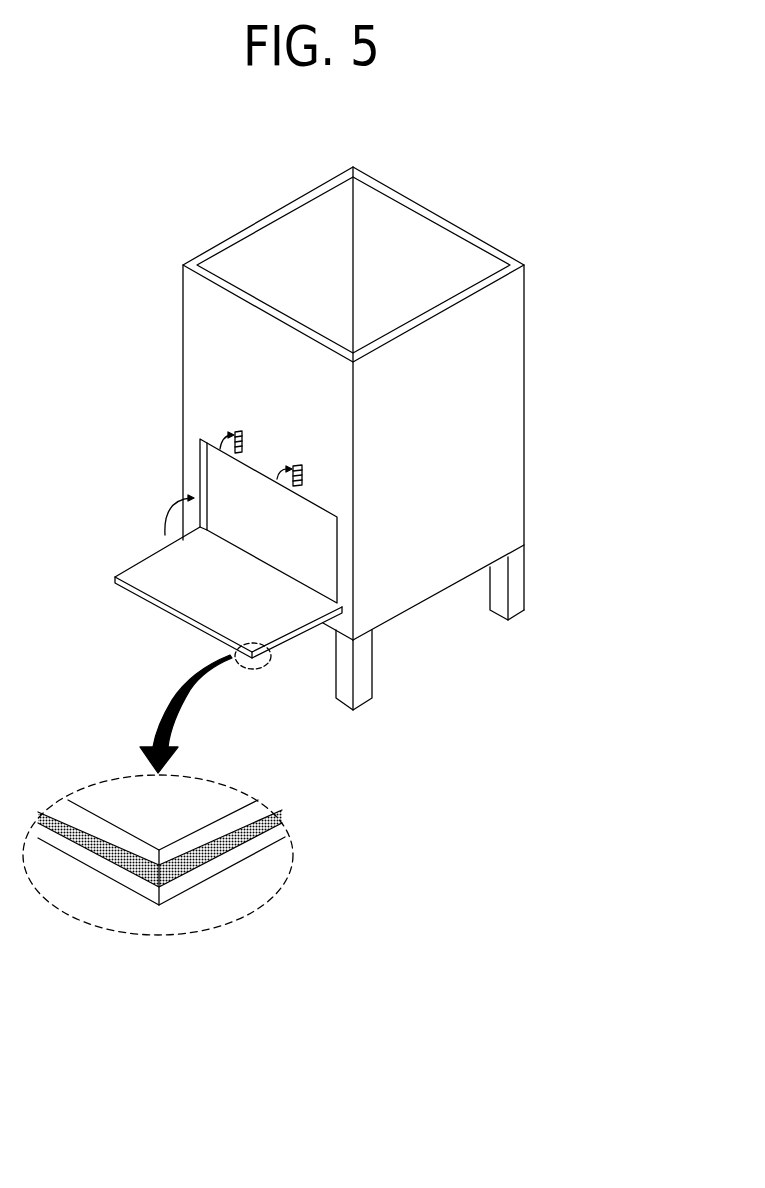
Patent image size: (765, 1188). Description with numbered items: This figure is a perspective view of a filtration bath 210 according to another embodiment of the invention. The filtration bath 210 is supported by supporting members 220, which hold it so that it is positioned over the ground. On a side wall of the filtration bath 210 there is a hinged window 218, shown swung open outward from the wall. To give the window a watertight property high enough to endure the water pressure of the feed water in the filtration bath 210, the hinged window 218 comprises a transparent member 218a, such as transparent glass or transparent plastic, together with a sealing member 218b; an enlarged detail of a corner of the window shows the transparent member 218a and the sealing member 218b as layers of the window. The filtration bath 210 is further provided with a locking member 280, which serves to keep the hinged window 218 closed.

The filtration bath 210 is at (519, 398).
The supporting members 220 is at (518, 584).
The locking member 280 is at (240, 436).
The hinged window 218 is at (142, 570).
The transparent member 218a is at (183, 883).
The sealing member 218b is at (243, 841).